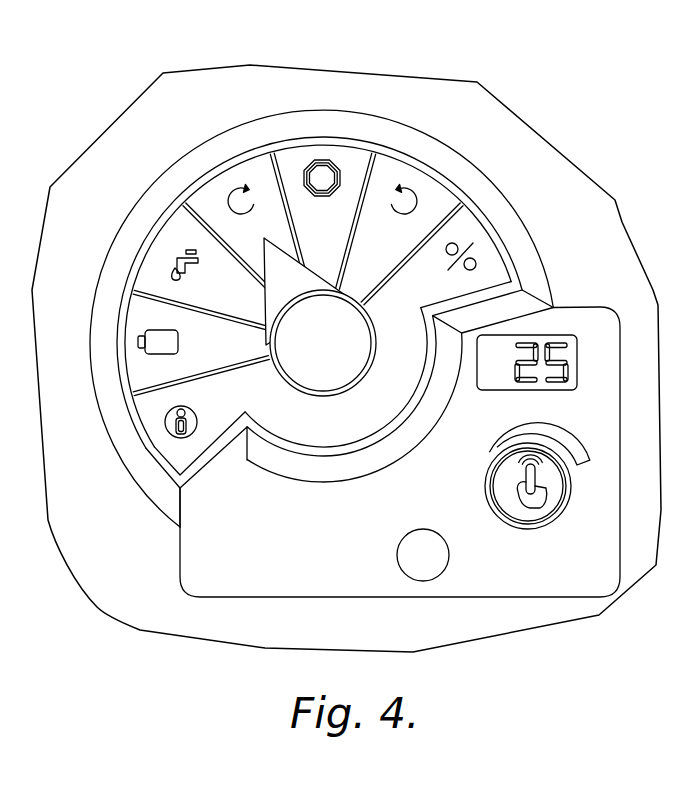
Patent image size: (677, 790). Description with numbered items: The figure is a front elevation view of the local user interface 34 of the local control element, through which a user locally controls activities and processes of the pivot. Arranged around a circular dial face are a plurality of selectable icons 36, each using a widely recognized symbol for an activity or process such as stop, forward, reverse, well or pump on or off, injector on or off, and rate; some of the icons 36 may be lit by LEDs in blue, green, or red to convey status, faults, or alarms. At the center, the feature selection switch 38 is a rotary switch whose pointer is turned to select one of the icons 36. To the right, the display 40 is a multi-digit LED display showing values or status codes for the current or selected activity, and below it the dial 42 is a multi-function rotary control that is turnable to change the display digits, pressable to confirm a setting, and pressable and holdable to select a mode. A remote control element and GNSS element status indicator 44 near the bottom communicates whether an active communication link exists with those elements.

The local user interface 34 is at (482, 133).
The selectable icons 36 is at (165, 422).
The feature selection switch 38 is at (322, 362).
The display 40 is at (571, 342).
The dial 42 is at (523, 493).
The remote control element and GNSS element status indicator 44 is at (423, 565).